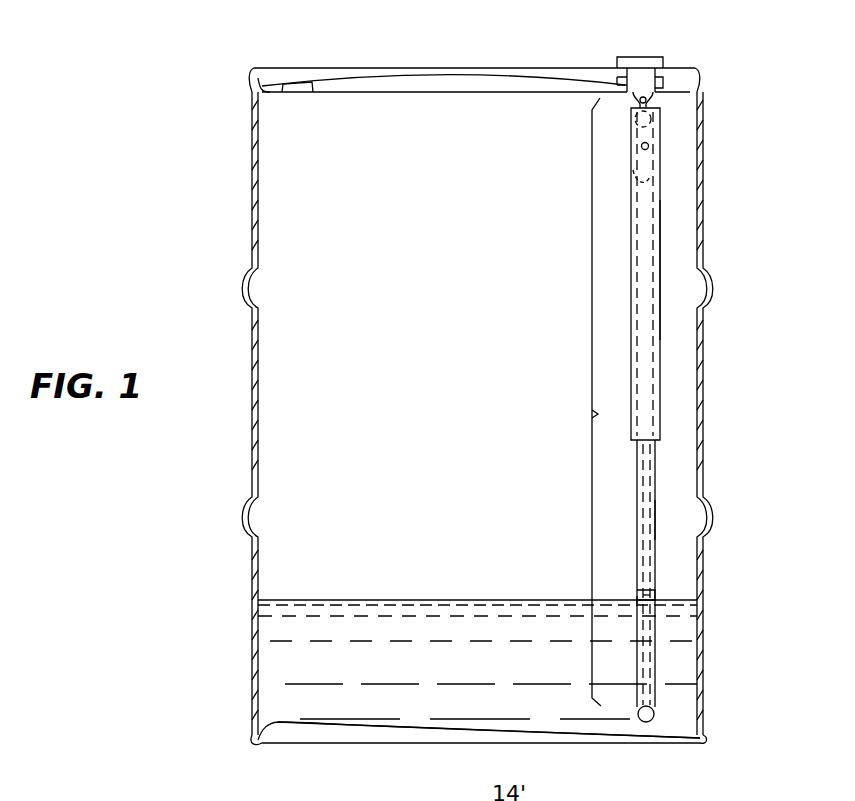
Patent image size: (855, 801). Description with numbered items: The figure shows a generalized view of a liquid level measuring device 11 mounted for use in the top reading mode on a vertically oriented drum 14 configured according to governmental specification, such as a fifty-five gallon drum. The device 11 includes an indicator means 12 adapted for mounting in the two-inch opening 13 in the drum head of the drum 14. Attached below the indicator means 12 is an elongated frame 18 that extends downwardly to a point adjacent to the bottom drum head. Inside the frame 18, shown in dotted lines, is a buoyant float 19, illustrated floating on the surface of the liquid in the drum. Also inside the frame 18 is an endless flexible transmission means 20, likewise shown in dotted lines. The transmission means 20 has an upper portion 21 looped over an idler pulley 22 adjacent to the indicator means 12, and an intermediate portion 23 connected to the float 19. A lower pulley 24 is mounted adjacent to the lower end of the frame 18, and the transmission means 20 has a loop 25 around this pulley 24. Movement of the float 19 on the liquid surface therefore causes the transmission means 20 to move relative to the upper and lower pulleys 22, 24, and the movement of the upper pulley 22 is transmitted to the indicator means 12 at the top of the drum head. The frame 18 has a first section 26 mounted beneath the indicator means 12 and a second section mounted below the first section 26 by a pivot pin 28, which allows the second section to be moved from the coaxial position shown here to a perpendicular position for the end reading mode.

The liquid level measuring device 11 is at (687, 254).
The indicator means 12 is at (641, 68).
The opening 13 is at (664, 78).
The drum 14 is at (700, 146).
The frame 18 is at (592, 413).
The buoyant float 19 is at (636, 590).
The endless flexible transmission means 20 is at (652, 449).
The upper portion 21 is at (631, 113).
The idler pulley 22 is at (652, 112).
The intermediate portion 23 is at (651, 586).
The pulley 24 is at (654, 720).
The loop 25 is at (655, 698).
The first section 26 is at (660, 182).
The pivot pin 28 is at (648, 148).